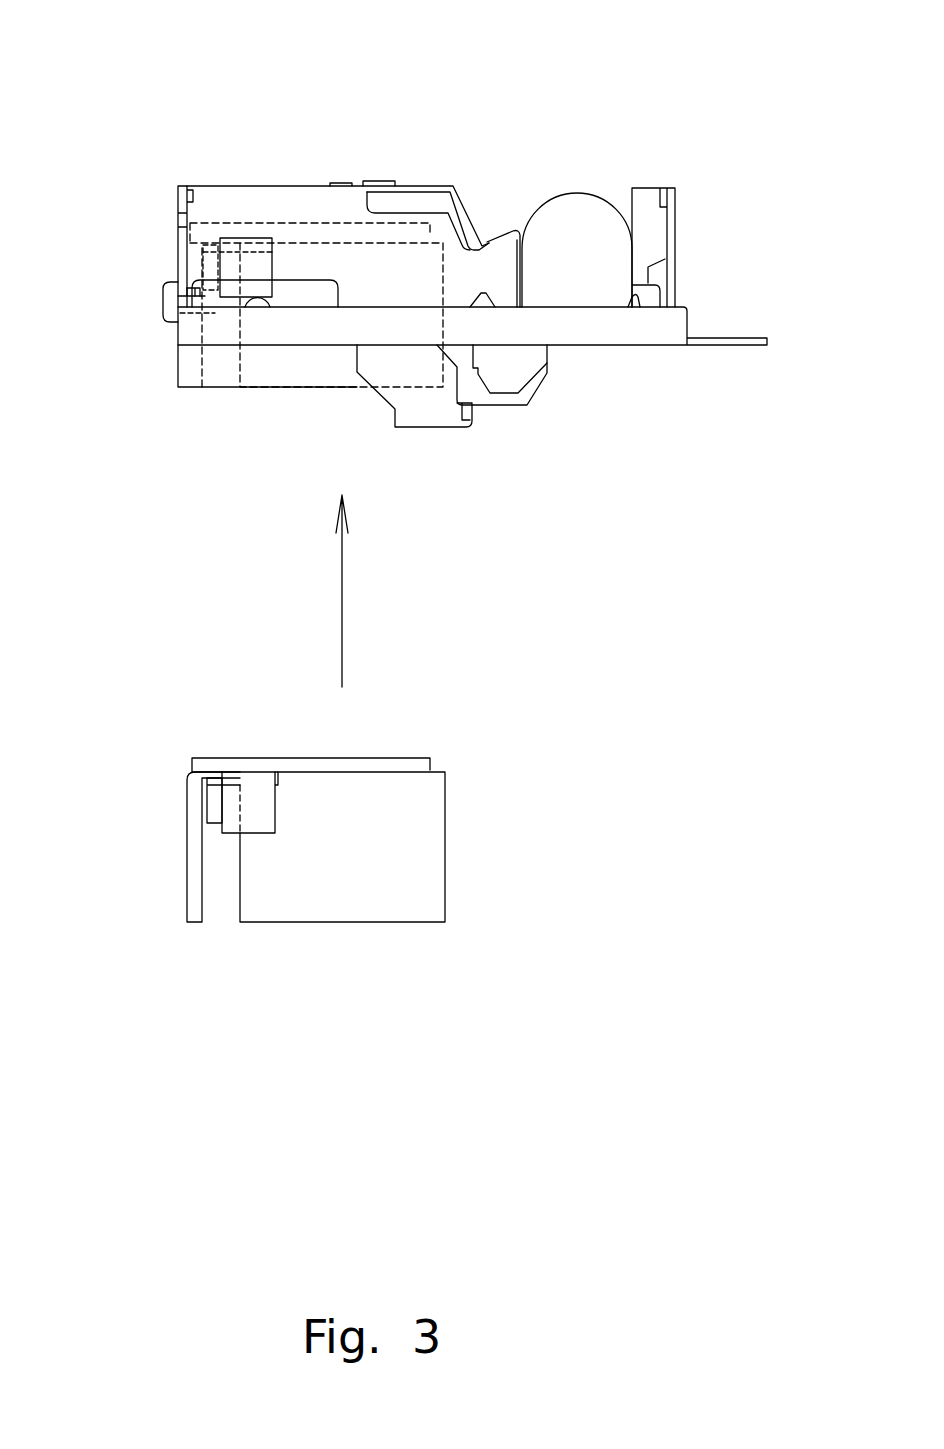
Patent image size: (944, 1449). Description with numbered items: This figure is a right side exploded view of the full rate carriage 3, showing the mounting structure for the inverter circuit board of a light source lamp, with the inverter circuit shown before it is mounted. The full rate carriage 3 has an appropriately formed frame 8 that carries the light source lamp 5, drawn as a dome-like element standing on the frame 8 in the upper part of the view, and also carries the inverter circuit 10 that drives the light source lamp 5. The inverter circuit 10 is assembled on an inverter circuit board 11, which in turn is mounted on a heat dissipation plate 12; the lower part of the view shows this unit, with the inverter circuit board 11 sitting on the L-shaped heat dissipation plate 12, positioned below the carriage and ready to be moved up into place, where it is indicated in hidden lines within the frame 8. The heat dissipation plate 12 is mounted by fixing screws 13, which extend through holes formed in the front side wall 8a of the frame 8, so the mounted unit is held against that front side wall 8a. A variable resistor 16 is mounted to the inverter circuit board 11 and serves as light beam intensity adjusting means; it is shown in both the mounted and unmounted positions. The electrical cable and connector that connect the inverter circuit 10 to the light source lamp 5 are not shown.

The full rate carriage 3 is at (462, 140).
The light source lamp 5 is at (583, 218).
The frame 8 is at (623, 333).
The front side wall 8a is at (195, 258).
The inverter circuit 10 is at (305, 250).
The inverter circuit board 11 is at (235, 765).
The heat dissipation plate 12 is at (192, 865).
The fixing screws 13 is at (173, 302).
The variable resistor 16 is at (250, 263).